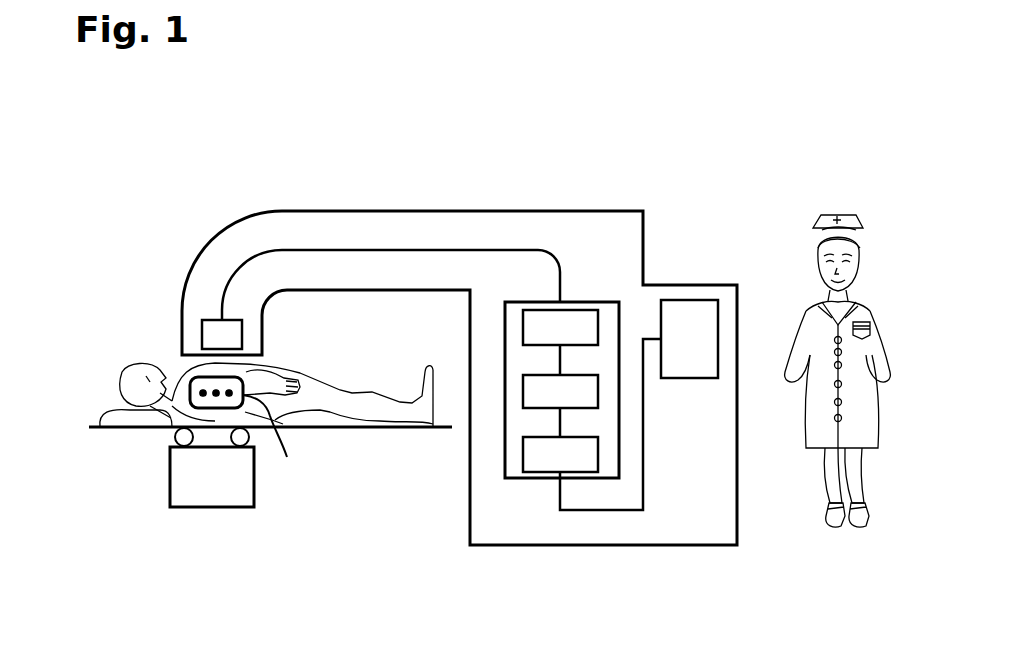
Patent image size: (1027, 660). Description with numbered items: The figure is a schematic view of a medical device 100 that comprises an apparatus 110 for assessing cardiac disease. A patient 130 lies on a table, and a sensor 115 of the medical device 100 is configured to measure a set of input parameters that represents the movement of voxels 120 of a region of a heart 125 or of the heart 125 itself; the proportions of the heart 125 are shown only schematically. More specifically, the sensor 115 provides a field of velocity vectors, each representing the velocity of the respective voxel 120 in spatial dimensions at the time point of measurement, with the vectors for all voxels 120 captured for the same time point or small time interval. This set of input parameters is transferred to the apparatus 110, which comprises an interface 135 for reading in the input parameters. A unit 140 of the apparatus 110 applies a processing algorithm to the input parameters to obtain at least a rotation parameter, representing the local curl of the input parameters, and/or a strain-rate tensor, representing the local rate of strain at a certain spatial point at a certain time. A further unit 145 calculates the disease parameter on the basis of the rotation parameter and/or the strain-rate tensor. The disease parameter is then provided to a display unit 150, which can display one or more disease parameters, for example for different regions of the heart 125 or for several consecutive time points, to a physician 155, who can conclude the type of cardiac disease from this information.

The medical device 100 is at (190, 159).
The apparatus 110 is at (601, 300).
The sensor 115 is at (202, 336).
The voxels 120 is at (231, 383).
The heart 125 is at (286, 440).
The patient 130 is at (128, 393).
The interface 135 is at (585, 340).
The unit for applying a processing algorithm 140 is at (585, 404).
The unit for calculating the disease parameter 145 is at (585, 467).
The display unit 150 is at (667, 347).
The physician 155 is at (862, 313).